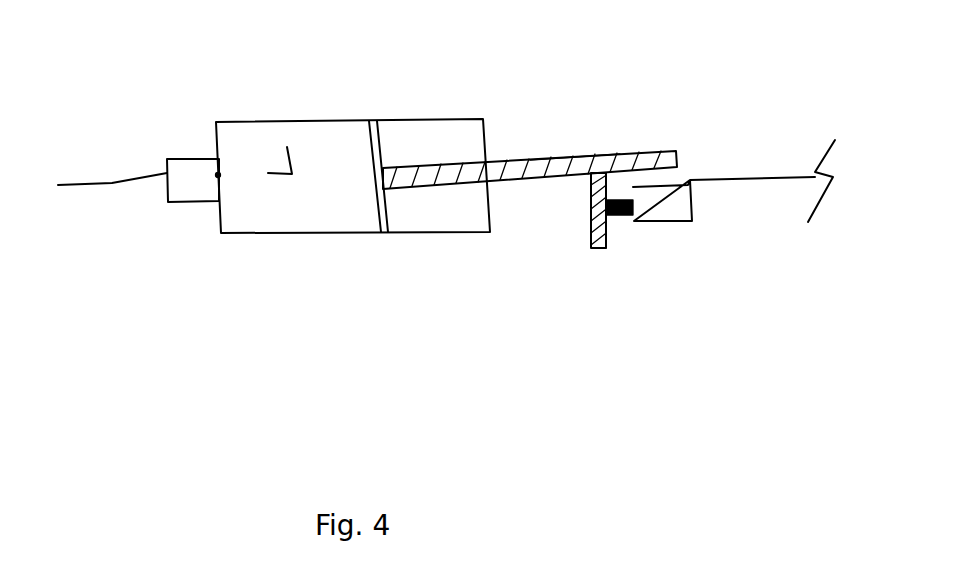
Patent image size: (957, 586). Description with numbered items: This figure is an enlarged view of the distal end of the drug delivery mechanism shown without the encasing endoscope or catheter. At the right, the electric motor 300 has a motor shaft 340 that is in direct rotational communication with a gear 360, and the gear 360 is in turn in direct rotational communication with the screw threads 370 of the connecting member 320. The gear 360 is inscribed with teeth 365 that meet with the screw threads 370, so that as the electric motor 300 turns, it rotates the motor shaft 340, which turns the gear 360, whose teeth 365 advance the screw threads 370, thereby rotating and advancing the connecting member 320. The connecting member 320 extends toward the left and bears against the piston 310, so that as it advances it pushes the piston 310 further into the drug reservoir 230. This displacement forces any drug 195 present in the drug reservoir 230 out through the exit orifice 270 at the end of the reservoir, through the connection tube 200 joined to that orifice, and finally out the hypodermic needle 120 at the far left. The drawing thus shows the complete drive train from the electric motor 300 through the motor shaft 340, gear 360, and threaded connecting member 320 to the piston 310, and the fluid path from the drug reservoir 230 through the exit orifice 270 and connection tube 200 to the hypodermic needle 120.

The hypodermic needle 120 is at (94, 201).
The connection tube 200 is at (199, 215).
The exit orifice 270 is at (218, 175).
The drug reservoir 230 is at (294, 246).
The drug 195 is at (284, 168).
The piston 310 is at (383, 112).
The connecting member 320 is at (528, 191).
The screw threads 370 is at (615, 158).
The teeth 365 is at (597, 250).
The gear 360 is at (614, 262).
The motor shaft 340 is at (634, 227).
The electric motor 300 is at (691, 228).